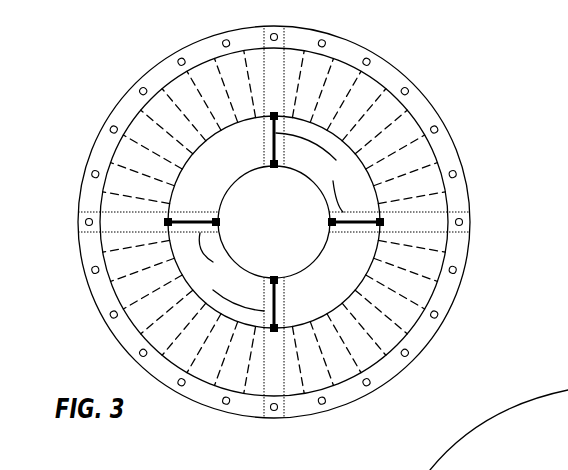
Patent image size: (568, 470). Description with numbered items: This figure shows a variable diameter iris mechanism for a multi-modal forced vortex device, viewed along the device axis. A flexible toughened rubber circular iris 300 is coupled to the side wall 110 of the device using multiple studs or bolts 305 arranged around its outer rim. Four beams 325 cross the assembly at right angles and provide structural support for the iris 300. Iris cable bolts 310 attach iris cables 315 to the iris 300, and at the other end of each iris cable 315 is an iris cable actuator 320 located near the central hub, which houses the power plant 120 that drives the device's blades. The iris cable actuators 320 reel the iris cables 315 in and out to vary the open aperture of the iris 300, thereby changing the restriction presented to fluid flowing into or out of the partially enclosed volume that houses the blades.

The circular iris 300 is at (393, 102).
The side wall 110 is at (447, 127).
The studs or bolts 305 is at (460, 173).
The beams 325 is at (279, 37).
The iris cable bolts 310 is at (277, 114).
The iris cable actuators 320 is at (270, 164).
The iris cables 315 is at (273, 222).
The power plant 120 is at (293, 235).